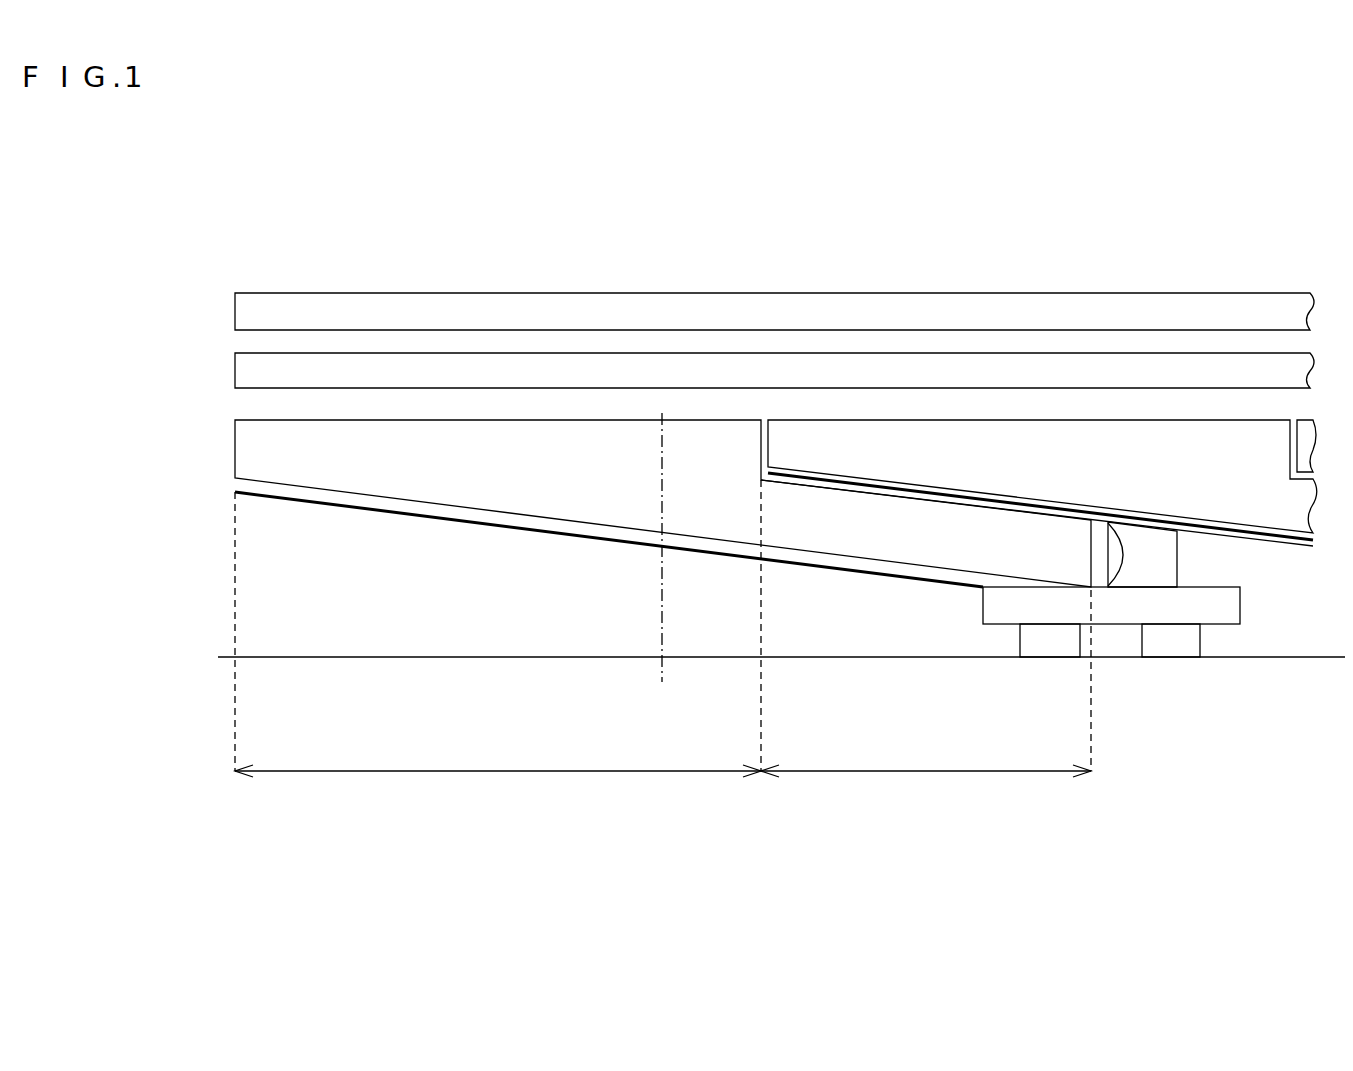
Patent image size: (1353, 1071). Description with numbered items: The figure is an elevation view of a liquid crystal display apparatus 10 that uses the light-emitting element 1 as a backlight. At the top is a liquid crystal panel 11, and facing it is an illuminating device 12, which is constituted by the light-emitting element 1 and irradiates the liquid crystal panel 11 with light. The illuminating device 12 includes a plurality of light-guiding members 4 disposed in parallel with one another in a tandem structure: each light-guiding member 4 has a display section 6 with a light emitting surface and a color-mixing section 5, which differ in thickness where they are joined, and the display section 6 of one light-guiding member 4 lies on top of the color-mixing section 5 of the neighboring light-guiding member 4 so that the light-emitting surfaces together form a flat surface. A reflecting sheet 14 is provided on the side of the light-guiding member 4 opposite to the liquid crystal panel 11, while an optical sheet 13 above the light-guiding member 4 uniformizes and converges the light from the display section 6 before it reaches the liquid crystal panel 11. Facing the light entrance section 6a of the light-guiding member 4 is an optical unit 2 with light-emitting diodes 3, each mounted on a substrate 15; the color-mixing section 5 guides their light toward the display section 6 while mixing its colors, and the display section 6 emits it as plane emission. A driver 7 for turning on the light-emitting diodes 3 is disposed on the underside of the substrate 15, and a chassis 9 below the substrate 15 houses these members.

The light-emitting element 1 is at (418, 408).
The optical unit 2 is at (1187, 552).
The light-emitting diode 3 is at (1157, 563).
The light-guiding member 4 is at (555, 418).
The color-mixing section 5 is at (924, 773).
The display section 6 is at (488, 773).
The light entrance section 6a is at (1093, 562).
The driver 7 is at (1048, 648).
The chassis 9 is at (1305, 656).
The liquid crystal display apparatus 10 is at (133, 290).
The liquid crystal panel 11 is at (204, 292).
The illuminating device 12 is at (204, 351).
The optical sheet 13 is at (341, 353).
The reflecting sheet 14 is at (903, 487).
The substrate 15 is at (983, 610).